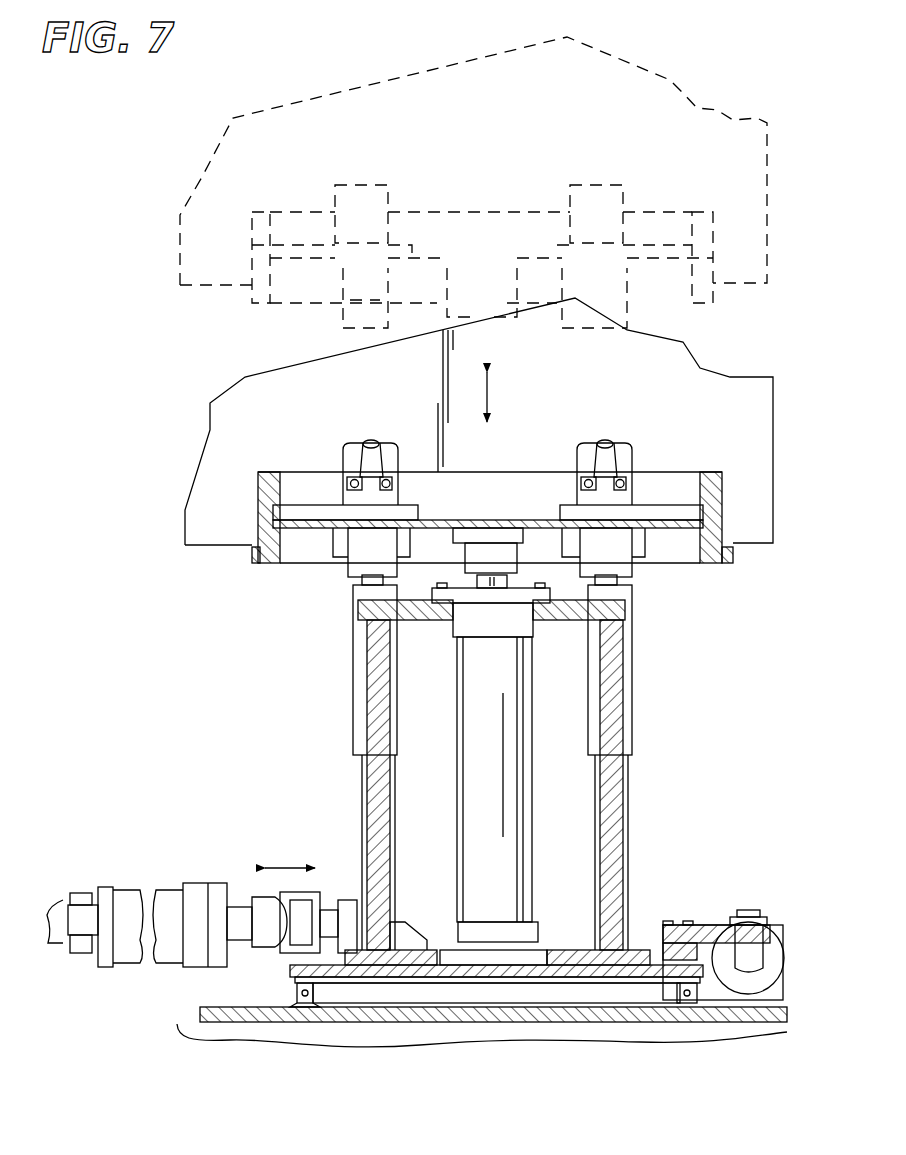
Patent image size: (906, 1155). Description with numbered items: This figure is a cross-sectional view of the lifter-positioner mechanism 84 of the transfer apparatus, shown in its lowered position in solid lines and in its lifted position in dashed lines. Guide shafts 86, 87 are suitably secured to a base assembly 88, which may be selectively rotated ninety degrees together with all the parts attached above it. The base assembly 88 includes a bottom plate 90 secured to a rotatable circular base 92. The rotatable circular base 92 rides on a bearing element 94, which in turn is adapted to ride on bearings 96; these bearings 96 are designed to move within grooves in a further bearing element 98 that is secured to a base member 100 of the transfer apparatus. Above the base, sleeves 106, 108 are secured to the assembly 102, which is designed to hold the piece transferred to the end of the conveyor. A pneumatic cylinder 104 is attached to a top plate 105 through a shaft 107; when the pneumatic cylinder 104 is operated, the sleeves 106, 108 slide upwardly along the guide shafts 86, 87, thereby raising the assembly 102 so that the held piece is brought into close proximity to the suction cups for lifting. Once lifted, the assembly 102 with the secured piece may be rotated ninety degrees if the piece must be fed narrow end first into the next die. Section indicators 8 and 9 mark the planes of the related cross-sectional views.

The section line 8- 8 is at (627, 307).
The section line 9- 9 is at (85, 826).
The lifter-positioner mechanism 84 is at (305, 696).
The guide shaft 86 is at (370, 782).
The guide shaft 87 is at (617, 788).
The base assembly 88 is at (642, 925).
The bottom plate 90 is at (573, 955).
The rotatable circular base 92 is at (485, 970).
The bearing element 94 is at (293, 987).
The bearings 96 is at (313, 997).
The bearing element 98 is at (680, 993).
The base member 100 is at (747, 1013).
The assembly 102 is at (288, 577).
The pneumatic cylinder 104 is at (463, 802).
The top plate 105 is at (570, 615).
The sleeve 106 is at (353, 660).
The shaft 107 is at (485, 580).
The sleeve 108 is at (625, 703).